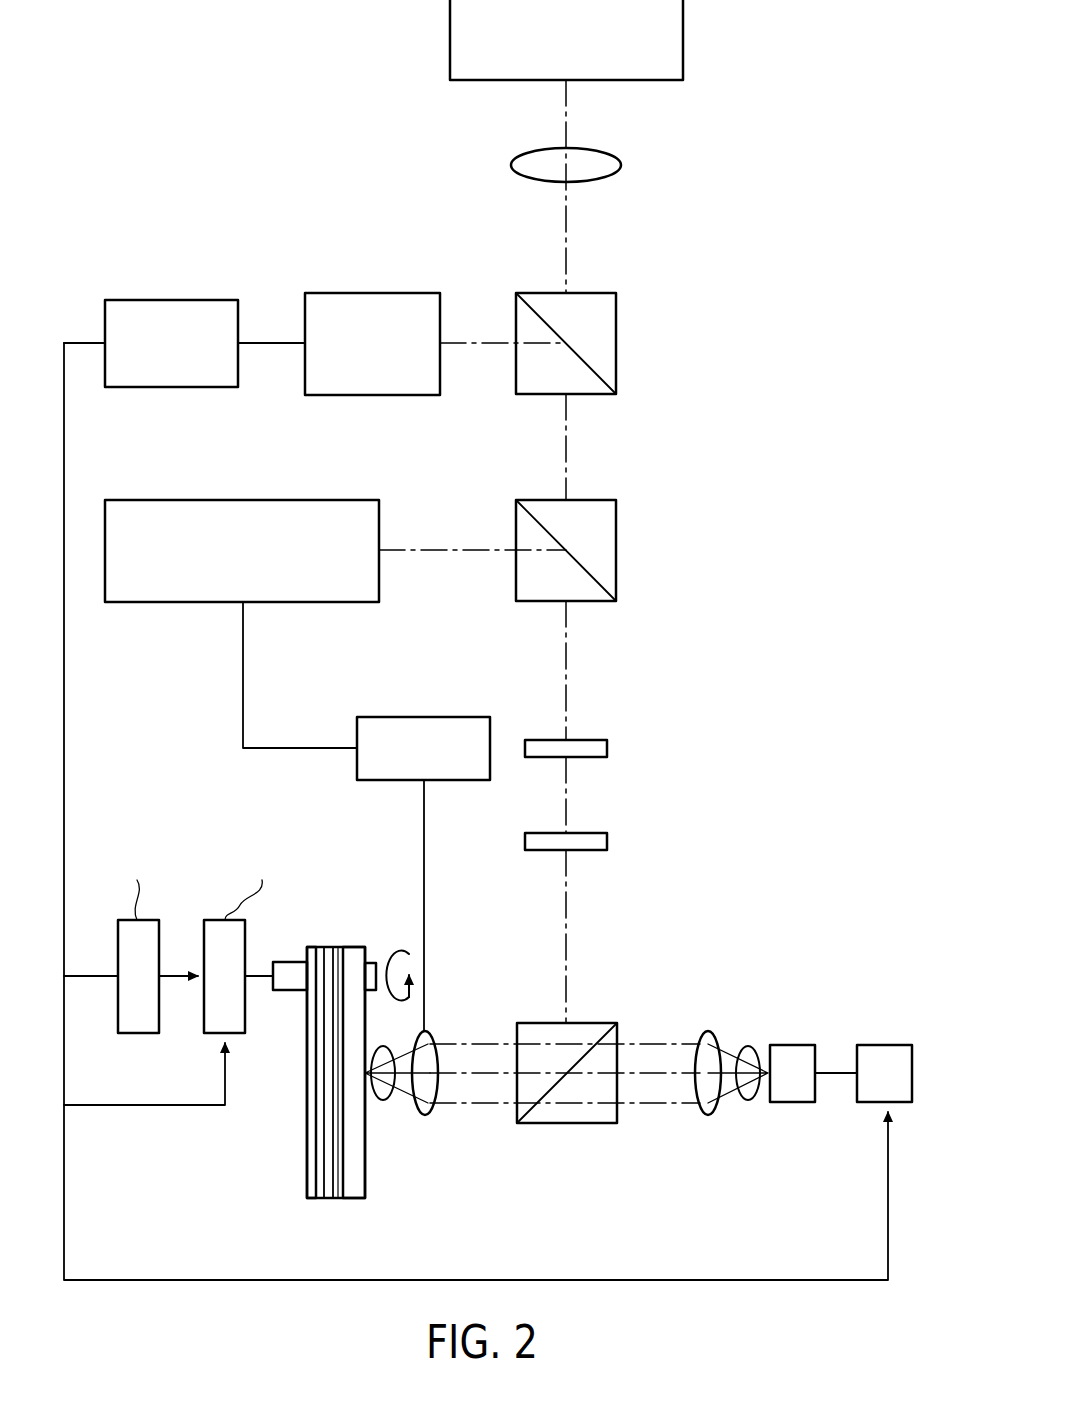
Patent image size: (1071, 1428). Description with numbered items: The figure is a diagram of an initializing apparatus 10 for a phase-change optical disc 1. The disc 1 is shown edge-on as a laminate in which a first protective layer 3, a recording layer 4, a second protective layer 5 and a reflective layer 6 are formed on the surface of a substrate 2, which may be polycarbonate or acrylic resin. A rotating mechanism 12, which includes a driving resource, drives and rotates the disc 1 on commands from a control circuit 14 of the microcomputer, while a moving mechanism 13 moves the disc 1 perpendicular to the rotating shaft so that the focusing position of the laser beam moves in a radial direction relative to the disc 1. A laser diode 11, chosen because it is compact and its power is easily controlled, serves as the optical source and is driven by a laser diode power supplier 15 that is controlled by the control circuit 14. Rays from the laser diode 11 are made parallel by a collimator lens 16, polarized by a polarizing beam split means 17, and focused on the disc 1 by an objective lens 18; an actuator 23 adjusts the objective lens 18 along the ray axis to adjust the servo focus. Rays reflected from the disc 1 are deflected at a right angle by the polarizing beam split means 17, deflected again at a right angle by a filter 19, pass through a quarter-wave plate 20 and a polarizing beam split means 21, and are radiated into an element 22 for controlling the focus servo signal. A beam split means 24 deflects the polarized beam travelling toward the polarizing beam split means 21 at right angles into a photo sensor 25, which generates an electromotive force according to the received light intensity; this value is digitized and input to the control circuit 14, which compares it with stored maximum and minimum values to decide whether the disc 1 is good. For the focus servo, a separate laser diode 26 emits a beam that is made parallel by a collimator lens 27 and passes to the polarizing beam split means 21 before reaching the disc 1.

The optical disc 1 is at (318, 1104).
The substrate 2 is at (355, 1198).
The first protective layer 3 is at (343, 1165).
The recording layer 4 is at (333, 1125).
The second protective layer 5 is at (323, 1088).
The reflective layer 6 is at (307, 1056).
The initializing apparatus 10 is at (730, 714).
The laser diode 11 is at (792, 1046).
The rotating mechanism 12 is at (210, 1033).
The moving mechanism 13 is at (137, 1033).
The control circuit 14 is at (170, 300).
The laser diode power supplier 15 is at (892, 1046).
The collimator lens 16 is at (710, 1114).
The polarizing beam split means 17 is at (578, 1124).
The objective lens 18 is at (430, 1112).
The filter 19 is at (607, 841).
The quarter-wave plate 20 is at (607, 748).
The polarizing beam split means 21 is at (616, 550).
The element for controlling the focus servo signal 22 is at (243, 500).
The actuator 23 is at (420, 717).
The beam split means 24 is at (616, 343).
The photo sensor 25 is at (395, 293).
The laser diode for the focus servo 26 is at (683, 40).
The collimator lens 27 is at (621, 163).